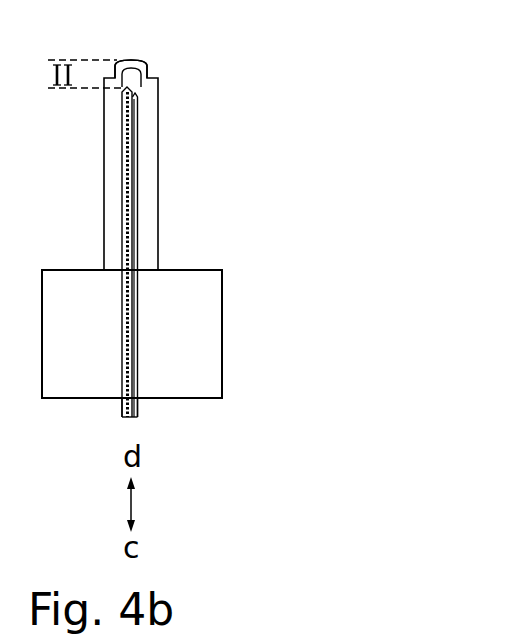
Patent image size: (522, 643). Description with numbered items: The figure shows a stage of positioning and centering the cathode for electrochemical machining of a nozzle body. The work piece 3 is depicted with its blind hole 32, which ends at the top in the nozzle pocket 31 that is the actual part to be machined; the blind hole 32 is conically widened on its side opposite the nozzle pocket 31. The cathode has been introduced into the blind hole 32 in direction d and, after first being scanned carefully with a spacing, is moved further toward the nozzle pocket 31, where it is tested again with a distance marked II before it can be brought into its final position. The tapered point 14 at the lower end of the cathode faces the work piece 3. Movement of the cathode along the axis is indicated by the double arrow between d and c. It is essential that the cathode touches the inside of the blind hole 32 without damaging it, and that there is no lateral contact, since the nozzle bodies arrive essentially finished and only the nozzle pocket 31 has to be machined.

The work piece 3 is at (152, 197).
The nozzle pocket 31 is at (129, 60).
The blind hole 32 is at (143, 157).
The tapered point 14 is at (141, 420).